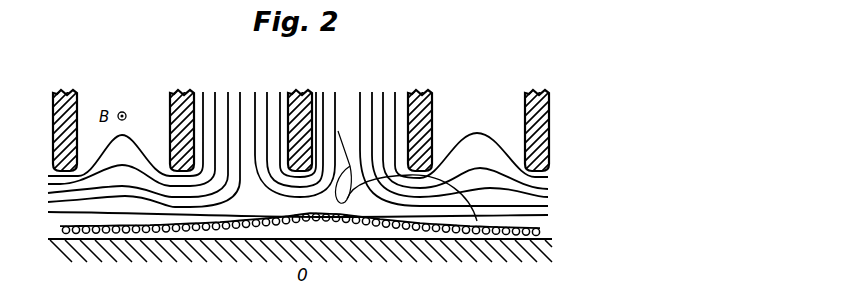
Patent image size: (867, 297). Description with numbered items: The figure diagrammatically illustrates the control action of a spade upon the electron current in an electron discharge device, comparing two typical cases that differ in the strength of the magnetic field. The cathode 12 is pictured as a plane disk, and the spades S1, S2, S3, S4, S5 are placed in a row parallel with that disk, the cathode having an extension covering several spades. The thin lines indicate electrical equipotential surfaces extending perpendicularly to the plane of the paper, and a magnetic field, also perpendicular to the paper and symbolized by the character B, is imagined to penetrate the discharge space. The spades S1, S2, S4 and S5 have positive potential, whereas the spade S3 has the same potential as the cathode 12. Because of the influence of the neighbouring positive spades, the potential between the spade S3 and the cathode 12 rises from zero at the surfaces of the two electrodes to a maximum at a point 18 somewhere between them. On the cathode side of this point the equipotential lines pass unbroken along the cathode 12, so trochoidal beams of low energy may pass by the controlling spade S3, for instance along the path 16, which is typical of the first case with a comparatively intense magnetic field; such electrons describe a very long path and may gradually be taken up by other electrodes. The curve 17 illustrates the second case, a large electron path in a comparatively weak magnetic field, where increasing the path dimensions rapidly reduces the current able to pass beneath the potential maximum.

The cathode 12 is at (313, 252).
The trochoidal curve 16 is at (543, 229).
The trochoidal curve 17 is at (471, 135).
The point of maximum potential 18 is at (300, 196).
The spade S1 is at (63, 83).
The spade S2 is at (182, 83).
The spade S3 is at (300, 123).
The spade S4 is at (418, 83).
The spade S5 is at (535, 83).